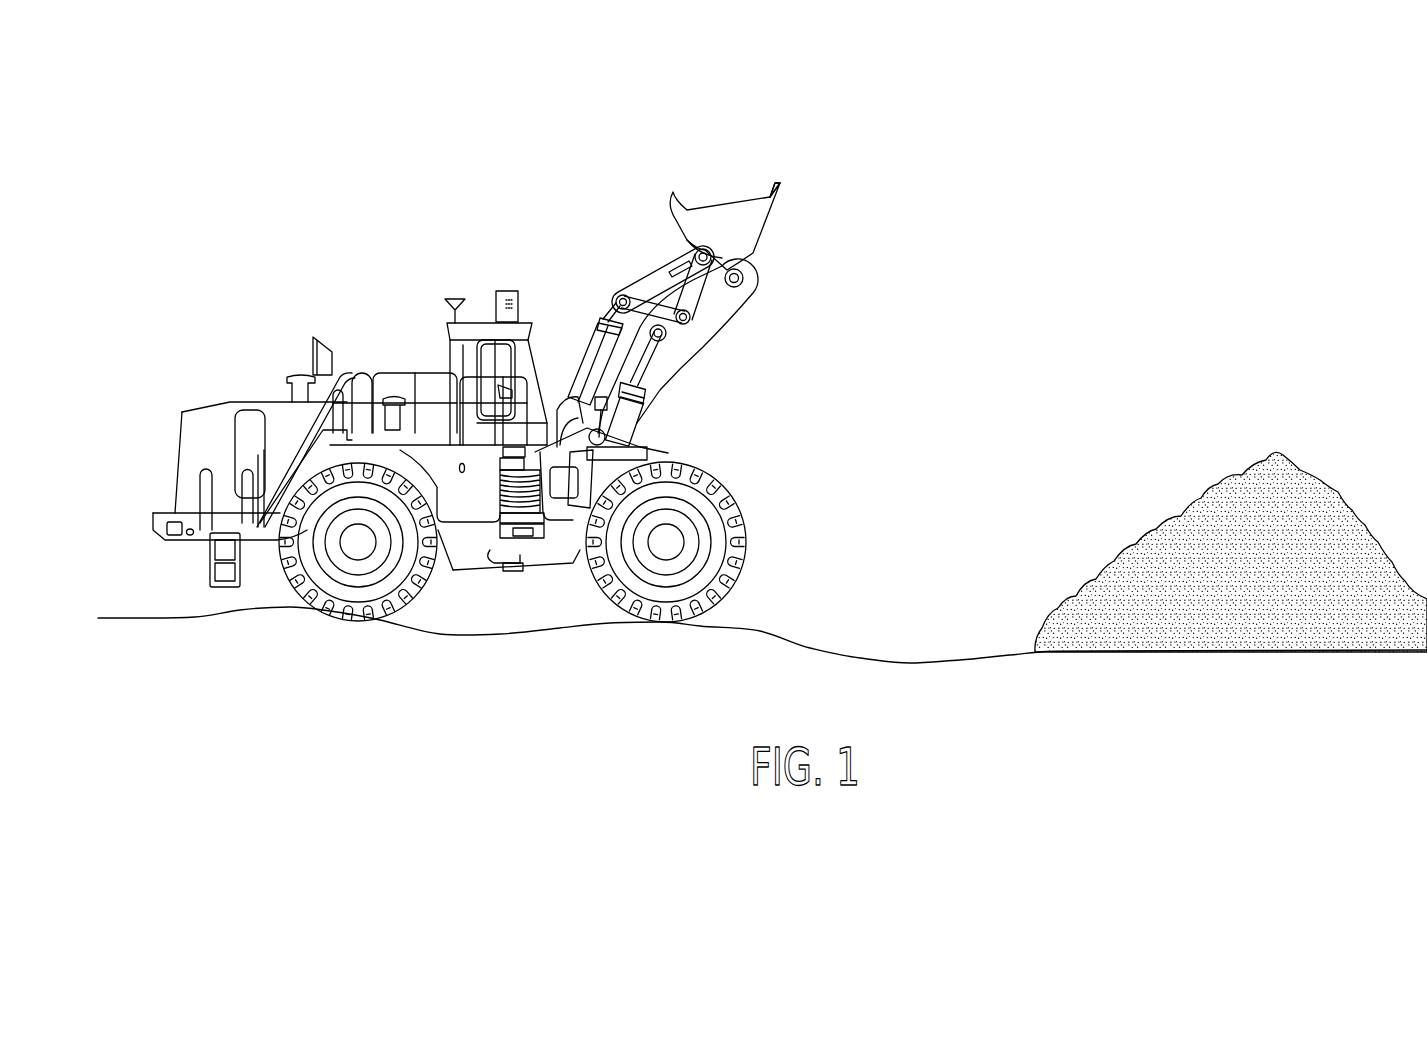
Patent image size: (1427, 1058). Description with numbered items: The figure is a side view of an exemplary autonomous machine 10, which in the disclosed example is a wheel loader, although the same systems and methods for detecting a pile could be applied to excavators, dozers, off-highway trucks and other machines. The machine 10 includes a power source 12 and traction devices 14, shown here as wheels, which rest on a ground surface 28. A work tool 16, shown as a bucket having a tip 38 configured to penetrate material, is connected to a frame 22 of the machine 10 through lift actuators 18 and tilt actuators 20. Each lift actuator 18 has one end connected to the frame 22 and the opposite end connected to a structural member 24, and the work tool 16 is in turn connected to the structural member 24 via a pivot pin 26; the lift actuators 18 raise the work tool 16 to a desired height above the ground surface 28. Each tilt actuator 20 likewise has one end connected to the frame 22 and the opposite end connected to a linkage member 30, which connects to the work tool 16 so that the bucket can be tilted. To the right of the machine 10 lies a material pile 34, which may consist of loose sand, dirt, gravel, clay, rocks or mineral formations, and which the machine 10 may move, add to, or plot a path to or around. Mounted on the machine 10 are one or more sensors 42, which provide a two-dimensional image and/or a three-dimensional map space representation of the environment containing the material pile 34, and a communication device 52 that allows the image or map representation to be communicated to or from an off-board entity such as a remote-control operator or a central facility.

The autonomous machine 10 is at (308, 310).
The power source 12 is at (194, 452).
The traction devices 14 is at (317, 612).
The work tool 16 is at (713, 205).
The lift actuators 18 is at (637, 403).
The tilt actuators 20 is at (592, 345).
The frame 22 is at (665, 452).
The structural member 24 is at (722, 317).
The pivot pin 26 is at (744, 280).
The ground surface 28 is at (773, 637).
The linkage member 30 is at (653, 280).
The material pile 34 is at (1337, 510).
The tip 38 is at (780, 177).
The sensors 42 is at (507, 291).
The communication device 52 is at (457, 315).